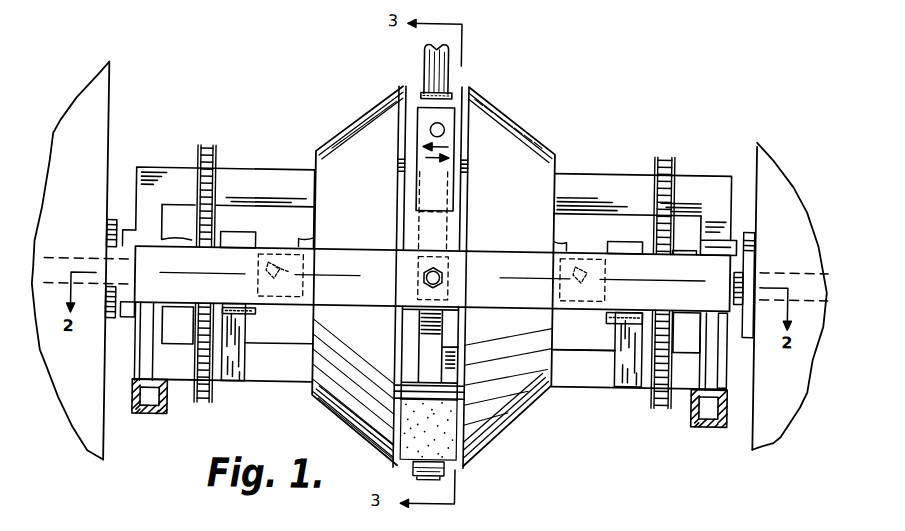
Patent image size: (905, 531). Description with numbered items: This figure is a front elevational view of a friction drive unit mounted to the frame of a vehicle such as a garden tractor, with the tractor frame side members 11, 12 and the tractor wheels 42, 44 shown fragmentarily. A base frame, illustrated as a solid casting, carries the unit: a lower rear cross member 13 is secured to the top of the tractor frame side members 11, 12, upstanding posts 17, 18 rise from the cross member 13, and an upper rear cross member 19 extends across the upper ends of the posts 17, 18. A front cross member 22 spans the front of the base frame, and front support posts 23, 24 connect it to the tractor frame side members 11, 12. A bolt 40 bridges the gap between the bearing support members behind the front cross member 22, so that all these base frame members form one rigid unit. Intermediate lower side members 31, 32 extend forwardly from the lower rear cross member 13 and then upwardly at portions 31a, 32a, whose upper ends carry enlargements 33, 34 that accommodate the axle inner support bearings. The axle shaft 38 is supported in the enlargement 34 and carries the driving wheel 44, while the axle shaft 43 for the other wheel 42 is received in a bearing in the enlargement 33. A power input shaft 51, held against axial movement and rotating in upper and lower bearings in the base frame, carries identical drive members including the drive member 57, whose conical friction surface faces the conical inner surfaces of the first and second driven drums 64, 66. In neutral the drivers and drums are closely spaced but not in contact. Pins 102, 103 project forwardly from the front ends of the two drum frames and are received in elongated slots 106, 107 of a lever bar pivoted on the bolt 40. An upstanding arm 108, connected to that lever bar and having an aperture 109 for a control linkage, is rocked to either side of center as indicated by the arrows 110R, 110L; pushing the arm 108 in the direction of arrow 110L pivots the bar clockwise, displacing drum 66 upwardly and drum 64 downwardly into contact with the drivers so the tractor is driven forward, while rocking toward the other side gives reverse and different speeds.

The tractor frame side member 11 is at (169, 403).
The tractor frame side member 12 is at (691, 411).
The lower rear cross member 13 is at (567, 382).
The upstanding post 17 is at (716, 222).
The upstanding post 18 is at (149, 218).
The upper rear cross member 19 is at (590, 183).
The front cross member 22 is at (350, 250).
The front support post 23 is at (146, 341).
The front support post 24 is at (717, 362).
The intermediate lower side member 31 is at (238, 382).
The upwardly extending portion 31a is at (250, 334).
The intermediate lower side member 32 is at (628, 386).
The upwardly extending portion 32a is at (622, 348).
The enlargement 33 is at (256, 315).
The enlargement 34 is at (607, 321).
The axle shaft 38 is at (741, 266).
The bolt 40 is at (443, 272).
The tractor wheel 42 is at (68, 392).
The axle shaft 43 is at (118, 253).
The tractor driving wheel 44 is at (780, 202).
The power input shaft 51 is at (422, 58).
The first drive member 57 is at (414, 100).
The first driven member 64 is at (500, 341).
The second driven member 66 is at (343, 343).
The pin 102 is at (606, 267).
The pin 103 is at (257, 264).
The elongated slot 106 is at (578, 289).
The elongated slot 107 is at (296, 287).
The upstanding arm 108 is at (446, 118).
The aperture 109 is at (428, 131).
The arrow 110R is at (428, 141).
The arrow 110L is at (430, 162).